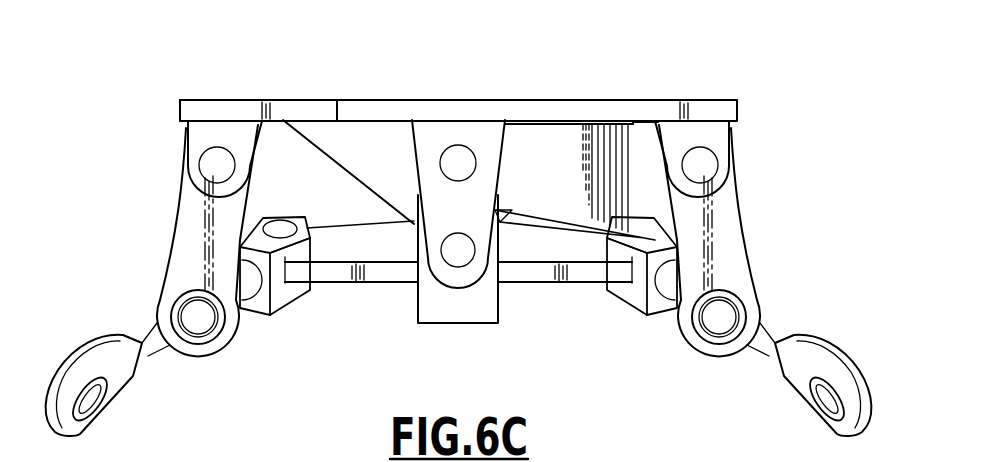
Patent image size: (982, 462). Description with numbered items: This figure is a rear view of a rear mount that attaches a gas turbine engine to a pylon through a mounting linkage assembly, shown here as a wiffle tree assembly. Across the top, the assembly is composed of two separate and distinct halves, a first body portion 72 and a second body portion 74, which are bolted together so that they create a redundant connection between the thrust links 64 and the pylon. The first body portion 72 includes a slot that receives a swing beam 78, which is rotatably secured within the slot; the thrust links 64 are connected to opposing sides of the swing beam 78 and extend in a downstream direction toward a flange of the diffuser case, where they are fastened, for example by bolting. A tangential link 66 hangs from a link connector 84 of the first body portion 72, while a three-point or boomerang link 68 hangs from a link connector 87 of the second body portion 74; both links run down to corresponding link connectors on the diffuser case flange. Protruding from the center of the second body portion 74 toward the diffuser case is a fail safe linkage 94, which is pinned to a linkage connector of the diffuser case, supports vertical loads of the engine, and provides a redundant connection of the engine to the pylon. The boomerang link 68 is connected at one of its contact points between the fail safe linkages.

The first body portion 72 is at (300, 108).
The second body portion 74 is at (553, 113).
The fail safe linkage 94 is at (487, 178).
The link connector 84 is at (200, 128).
The link connector 87 is at (717, 133).
The tangential link 66 is at (175, 265).
The three-point link 68 is at (738, 237).
The swing beam 78 is at (378, 233).
The thrust link 64 is at (152, 353).